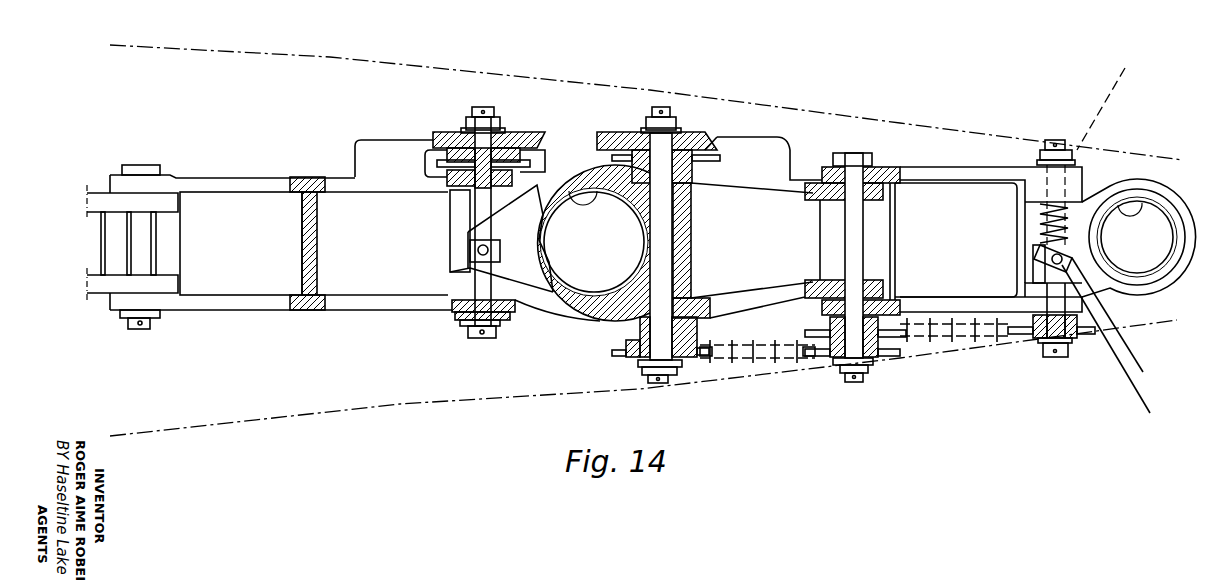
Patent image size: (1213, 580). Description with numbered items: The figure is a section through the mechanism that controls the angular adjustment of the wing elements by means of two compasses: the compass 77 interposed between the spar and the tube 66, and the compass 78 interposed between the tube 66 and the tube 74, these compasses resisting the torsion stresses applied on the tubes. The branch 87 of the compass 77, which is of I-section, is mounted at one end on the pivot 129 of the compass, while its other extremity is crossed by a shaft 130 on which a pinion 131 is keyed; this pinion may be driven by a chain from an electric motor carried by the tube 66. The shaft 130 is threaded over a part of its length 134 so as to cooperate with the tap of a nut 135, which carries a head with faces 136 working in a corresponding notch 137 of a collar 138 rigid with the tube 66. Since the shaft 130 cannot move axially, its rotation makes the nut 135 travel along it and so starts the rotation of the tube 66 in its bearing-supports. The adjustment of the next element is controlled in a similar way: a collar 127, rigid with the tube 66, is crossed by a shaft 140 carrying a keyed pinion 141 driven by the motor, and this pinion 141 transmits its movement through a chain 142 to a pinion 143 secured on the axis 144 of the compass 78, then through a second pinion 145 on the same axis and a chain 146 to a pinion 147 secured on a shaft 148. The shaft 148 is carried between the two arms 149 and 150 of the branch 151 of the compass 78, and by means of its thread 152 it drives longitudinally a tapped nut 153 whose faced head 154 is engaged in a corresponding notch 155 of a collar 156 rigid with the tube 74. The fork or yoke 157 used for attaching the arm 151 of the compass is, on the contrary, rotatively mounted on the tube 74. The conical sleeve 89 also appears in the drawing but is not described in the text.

The tube 66 is at (540, 178).
The tube 74 is at (1143, 207).
The compass 77 is at (221, 217).
The compass 78 is at (802, 199).
The branch 87 is at (314, 243).
The conical sleeve 89 is at (752, 250).
The collar 127 is at (652, 132).
The pivot 129 is at (148, 322).
The shaft 130 is at (455, 155).
The pinion 131 is at (490, 165).
The threaded length 134 is at (447, 219).
The nut 135 is at (458, 275).
The head with faces 136 is at (469, 262).
The notch 137 is at (505, 270).
The collar 138 is at (518, 245).
The shaft 140 is at (693, 137).
The pinion 141 is at (683, 357).
The chain 142 is at (767, 360).
The pinion 143 is at (925, 453).
The axis 144 is at (945, 158).
The second pinion 145 is at (888, 362).
The chain 146 is at (957, 337).
The pinion 147 is at (1082, 333).
The shaft 148 is at (1120, 66).
The arm 149 is at (1000, 170).
The arm 150 is at (995, 302).
The branch 151 is at (956, 240).
The thread 152 is at (1058, 198).
The tapped nut 153 is at (1038, 270).
The faced head 154 is at (1195, 413).
The notch 155 is at (1185, 374).
The collar 156 is at (1040, 222).
The fork or yoke 157 is at (1090, 193).